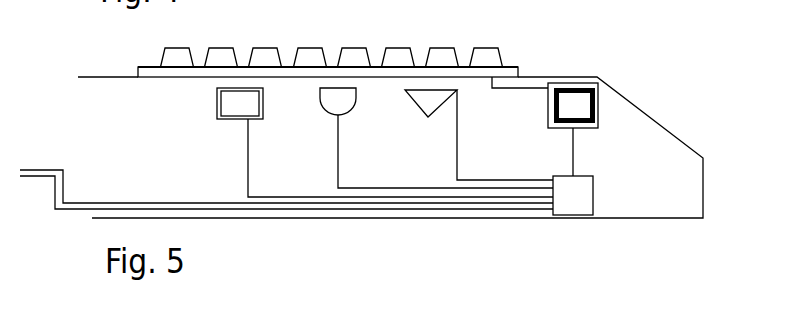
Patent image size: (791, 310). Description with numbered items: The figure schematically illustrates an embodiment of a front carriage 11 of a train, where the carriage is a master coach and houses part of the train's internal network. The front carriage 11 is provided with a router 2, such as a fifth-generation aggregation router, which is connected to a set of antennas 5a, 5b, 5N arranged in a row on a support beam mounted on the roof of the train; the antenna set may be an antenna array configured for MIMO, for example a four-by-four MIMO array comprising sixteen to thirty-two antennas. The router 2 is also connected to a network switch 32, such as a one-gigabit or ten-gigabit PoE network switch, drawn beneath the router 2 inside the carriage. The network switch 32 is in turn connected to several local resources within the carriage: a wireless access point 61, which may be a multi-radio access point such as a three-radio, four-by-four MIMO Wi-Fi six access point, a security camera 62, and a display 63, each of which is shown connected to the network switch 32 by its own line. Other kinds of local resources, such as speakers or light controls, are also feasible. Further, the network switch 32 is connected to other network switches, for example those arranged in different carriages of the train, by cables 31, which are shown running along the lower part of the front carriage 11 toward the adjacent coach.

The antenna 5N is at (185, 47).
The antenna 5b is at (445, 47).
The antenna 5a is at (491, 47).
The router 2 is at (597, 95).
The front carriage 11 is at (645, 110).
The display 63 is at (217, 103).
The wireless access point 61 is at (319, 100).
The security camera 62 is at (412, 96).
The cables 31 is at (228, 207).
The network switch 32 is at (595, 205).